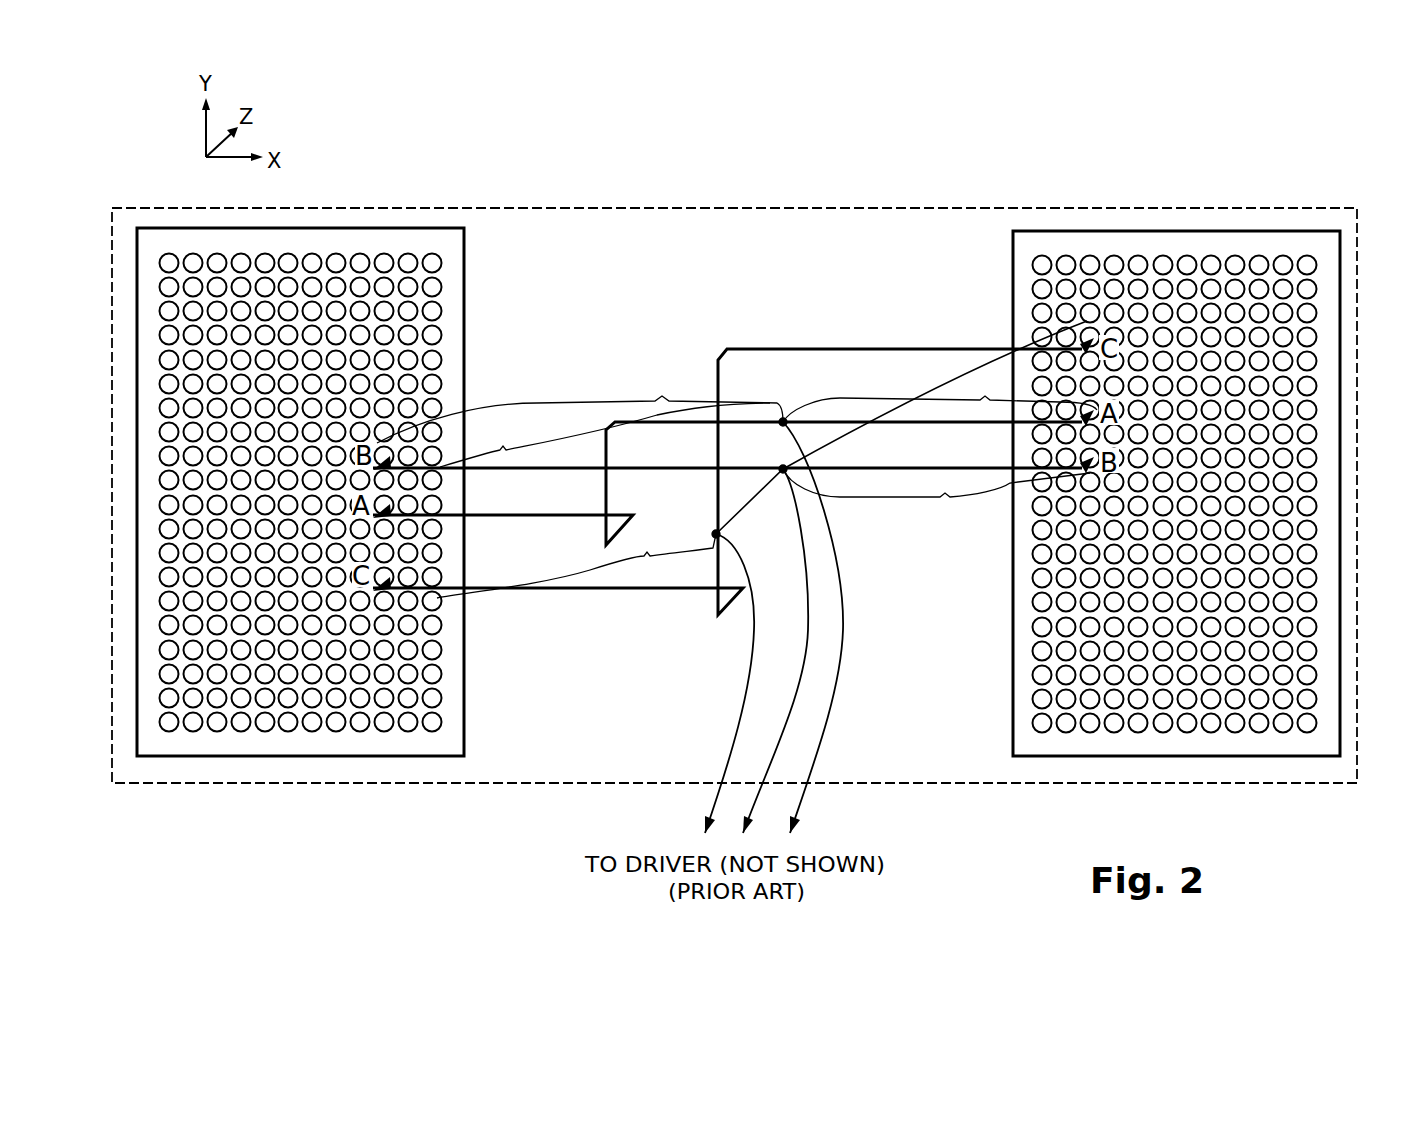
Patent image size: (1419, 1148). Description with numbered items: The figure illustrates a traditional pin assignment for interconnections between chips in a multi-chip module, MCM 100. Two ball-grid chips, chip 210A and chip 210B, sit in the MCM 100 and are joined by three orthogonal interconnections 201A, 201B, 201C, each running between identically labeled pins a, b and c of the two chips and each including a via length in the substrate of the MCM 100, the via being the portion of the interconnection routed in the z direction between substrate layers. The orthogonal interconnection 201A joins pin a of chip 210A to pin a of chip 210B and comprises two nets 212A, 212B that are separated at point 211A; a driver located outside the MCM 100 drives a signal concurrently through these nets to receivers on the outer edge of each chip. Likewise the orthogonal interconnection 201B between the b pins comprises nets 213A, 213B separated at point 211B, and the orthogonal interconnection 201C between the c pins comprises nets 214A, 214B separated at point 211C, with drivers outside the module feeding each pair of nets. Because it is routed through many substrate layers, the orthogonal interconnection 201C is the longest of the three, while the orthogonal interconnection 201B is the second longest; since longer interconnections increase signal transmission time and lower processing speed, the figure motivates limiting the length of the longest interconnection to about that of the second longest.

The MCM 100 is at (1357, 349).
The chip 210A is at (1140, 232).
The chip 210B is at (352, 228).
The orthogonal interconnection 201A is at (972, 423).
The orthogonal interconnection 201B is at (889, 467).
The orthogonal interconnection 201C is at (850, 349).
The point 211A is at (790, 418).
The point 211B is at (783, 466).
The point 211C is at (718, 533).
The net 212A is at (940, 398).
The net 212B is at (605, 435).
The net 213A is at (936, 501).
The net 213B is at (580, 405).
The net 214A is at (950, 379).
The net 214B is at (576, 566).